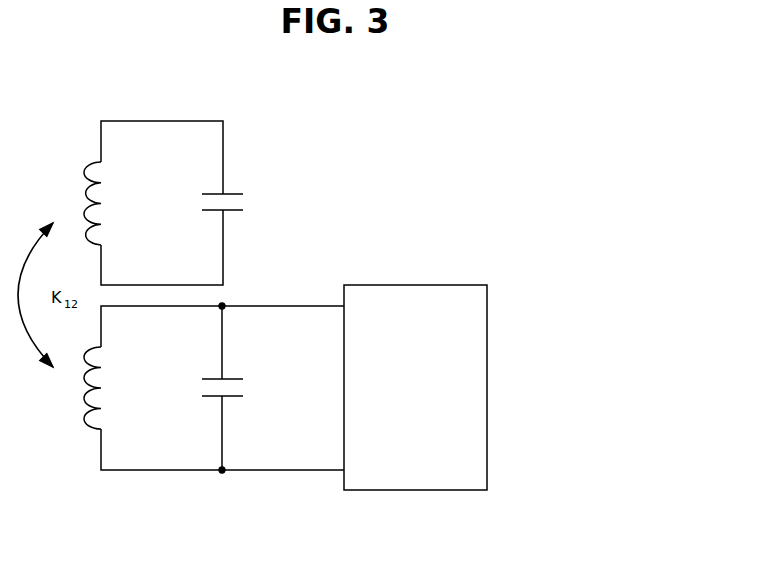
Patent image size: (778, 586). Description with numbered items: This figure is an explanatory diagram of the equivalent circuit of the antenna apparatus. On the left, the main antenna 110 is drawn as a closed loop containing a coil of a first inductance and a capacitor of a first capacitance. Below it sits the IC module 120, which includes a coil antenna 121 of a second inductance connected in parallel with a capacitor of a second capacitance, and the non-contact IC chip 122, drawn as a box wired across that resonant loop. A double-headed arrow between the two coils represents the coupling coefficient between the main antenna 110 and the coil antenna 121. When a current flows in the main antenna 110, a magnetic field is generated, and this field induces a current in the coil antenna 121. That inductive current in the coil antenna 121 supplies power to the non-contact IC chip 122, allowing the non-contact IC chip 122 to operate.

The main antenna 110 is at (157, 120).
The IC module 120 is at (332, 378).
The coil antenna 121 is at (158, 472).
The non-contact IC chip 122 is at (413, 284).